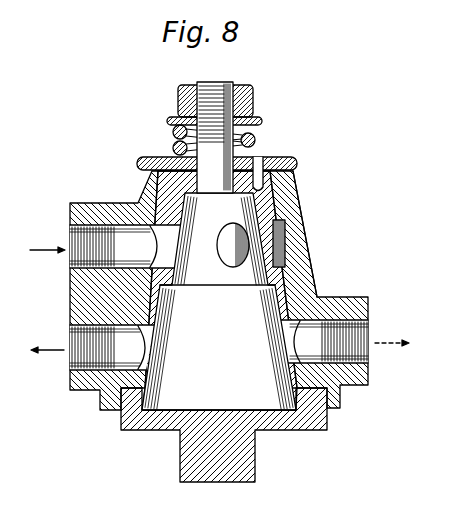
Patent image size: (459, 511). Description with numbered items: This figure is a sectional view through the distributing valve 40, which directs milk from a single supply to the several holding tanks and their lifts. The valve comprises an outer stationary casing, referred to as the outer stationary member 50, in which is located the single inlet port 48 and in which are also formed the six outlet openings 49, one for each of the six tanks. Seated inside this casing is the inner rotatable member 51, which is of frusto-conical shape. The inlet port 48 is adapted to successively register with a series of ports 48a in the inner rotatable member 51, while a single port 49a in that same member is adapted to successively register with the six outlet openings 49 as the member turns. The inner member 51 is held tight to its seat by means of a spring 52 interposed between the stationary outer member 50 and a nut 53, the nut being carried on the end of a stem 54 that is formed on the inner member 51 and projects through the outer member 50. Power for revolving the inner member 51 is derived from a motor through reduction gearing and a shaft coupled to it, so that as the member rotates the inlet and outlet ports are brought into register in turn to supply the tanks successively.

The distributing valve 40 is at (200, 283).
The inlet port 48 is at (70, 237).
The ports in inner rotatable portion 48a is at (186, 264).
The outlet openings 49 is at (70, 355).
The single port in inner member 49a is at (152, 360).
The outer stationary member 50 is at (312, 273).
The inner rotatable member 51 is at (132, 432).
The spring 52 is at (258, 142).
The nut 53 is at (181, 99).
The stem 54 is at (226, 86).